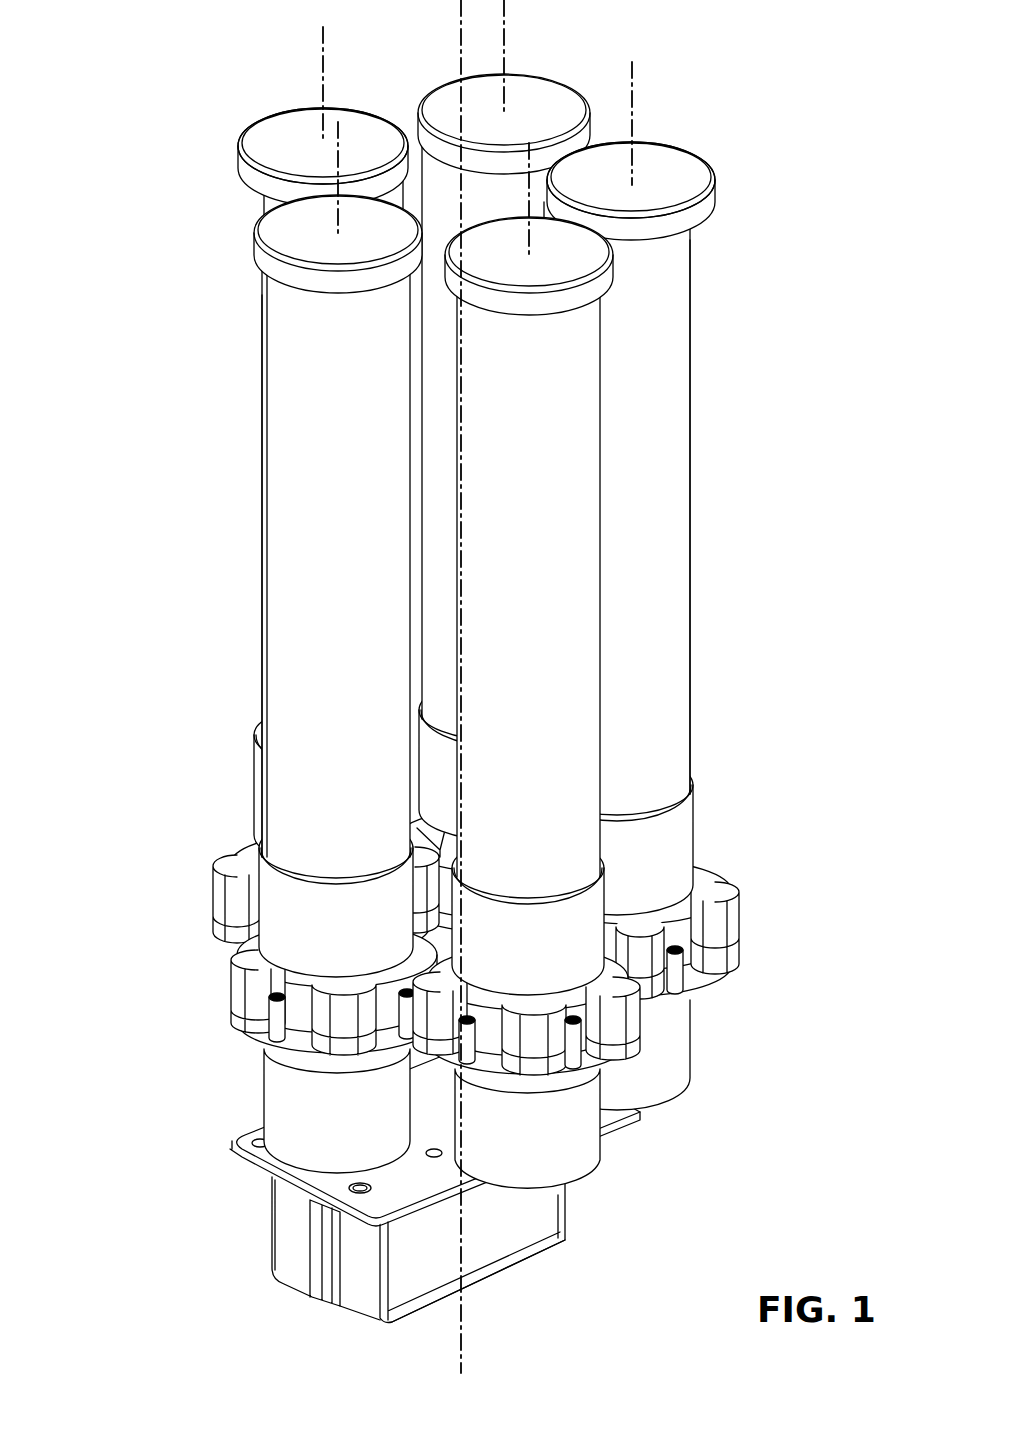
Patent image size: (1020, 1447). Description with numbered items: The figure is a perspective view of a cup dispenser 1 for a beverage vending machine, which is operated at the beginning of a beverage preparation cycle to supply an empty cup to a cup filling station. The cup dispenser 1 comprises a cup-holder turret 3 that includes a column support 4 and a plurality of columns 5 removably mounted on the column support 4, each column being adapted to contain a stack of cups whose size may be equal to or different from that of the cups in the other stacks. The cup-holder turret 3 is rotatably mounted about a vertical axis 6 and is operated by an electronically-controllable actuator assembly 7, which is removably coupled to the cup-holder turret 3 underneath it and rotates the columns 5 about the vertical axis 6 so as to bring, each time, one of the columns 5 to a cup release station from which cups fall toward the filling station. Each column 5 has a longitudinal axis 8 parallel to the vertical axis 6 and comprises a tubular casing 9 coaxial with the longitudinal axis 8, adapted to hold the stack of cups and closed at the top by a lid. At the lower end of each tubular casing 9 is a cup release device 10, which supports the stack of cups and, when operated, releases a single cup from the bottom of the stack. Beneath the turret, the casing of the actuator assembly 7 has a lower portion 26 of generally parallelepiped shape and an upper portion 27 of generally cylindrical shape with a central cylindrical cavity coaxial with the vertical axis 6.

The cup dispenser 1 is at (138, 122).
The cup-holder turret 3 is at (717, 483).
The column support 4 is at (413, 917).
The column 5 is at (608, 657).
The vertical axis 6 is at (458, 58).
The electronically-controllable actuator assembly 7 is at (530, 1266).
The longitudinal axis 8 is at (323, 42).
The tubular casing 9 is at (665, 366).
The cup release device 10 is at (748, 930).
The lower portion 26 is at (409, 1294).
The upper portion 27 is at (428, 1099).